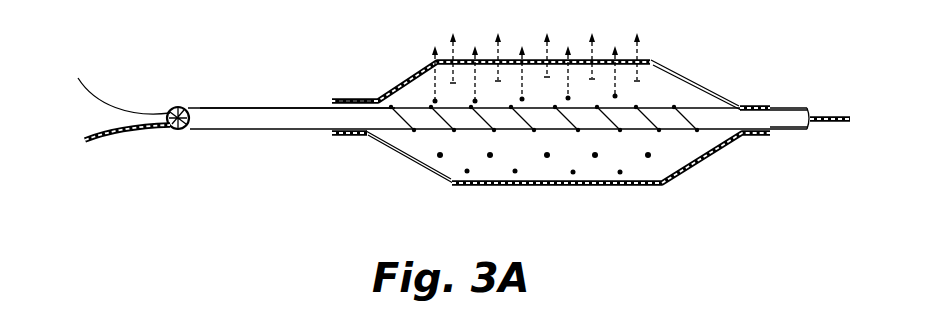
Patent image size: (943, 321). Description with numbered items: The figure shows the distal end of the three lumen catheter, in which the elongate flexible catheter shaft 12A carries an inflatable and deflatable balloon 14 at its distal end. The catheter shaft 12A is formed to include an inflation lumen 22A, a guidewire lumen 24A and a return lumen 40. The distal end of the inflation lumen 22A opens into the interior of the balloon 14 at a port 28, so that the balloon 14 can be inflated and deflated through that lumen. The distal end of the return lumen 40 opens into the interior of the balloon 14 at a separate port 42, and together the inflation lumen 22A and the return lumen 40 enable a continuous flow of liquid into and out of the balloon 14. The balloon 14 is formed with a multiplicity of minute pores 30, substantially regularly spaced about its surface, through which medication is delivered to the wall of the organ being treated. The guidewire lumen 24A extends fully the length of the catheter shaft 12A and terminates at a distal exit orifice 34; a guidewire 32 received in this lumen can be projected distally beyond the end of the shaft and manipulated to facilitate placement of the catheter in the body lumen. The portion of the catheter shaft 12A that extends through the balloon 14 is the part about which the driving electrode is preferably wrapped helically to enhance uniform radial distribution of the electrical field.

The catheter shaft 12A is at (277, 121).
The balloon 14 is at (706, 87).
The inflation lumen 22A is at (202, 112).
The guidewire lumen 24A is at (177, 133).
The port 28 is at (370, 102).
The pores 30 is at (617, 94).
The guidewire 32 is at (107, 143).
The distal exit orifice 34 is at (813, 108).
The return lumen 40 is at (172, 107).
The port 42 is at (556, 108).